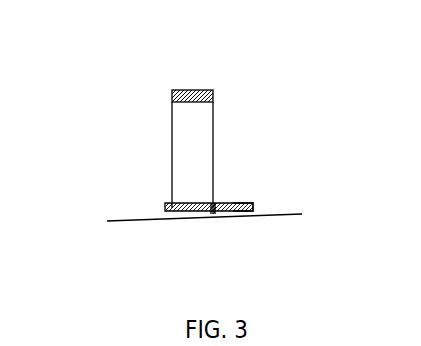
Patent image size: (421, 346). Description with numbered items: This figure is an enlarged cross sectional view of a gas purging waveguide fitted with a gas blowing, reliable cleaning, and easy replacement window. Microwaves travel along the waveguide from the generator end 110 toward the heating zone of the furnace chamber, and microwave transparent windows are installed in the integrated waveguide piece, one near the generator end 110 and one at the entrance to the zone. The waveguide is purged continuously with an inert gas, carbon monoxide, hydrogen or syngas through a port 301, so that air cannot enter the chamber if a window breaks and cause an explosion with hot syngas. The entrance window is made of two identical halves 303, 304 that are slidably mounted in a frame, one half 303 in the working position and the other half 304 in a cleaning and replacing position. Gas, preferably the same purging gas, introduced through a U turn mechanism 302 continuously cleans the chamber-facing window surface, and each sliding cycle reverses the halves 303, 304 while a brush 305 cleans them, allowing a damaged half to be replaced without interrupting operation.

The generator end 110 is at (194, 90).
The port 301 is at (214, 101).
The U turn mechanism 302 is at (168, 206).
The window half 303 is at (244, 203).
The window half 304 is at (178, 203).
The brush 305 is at (216, 214).